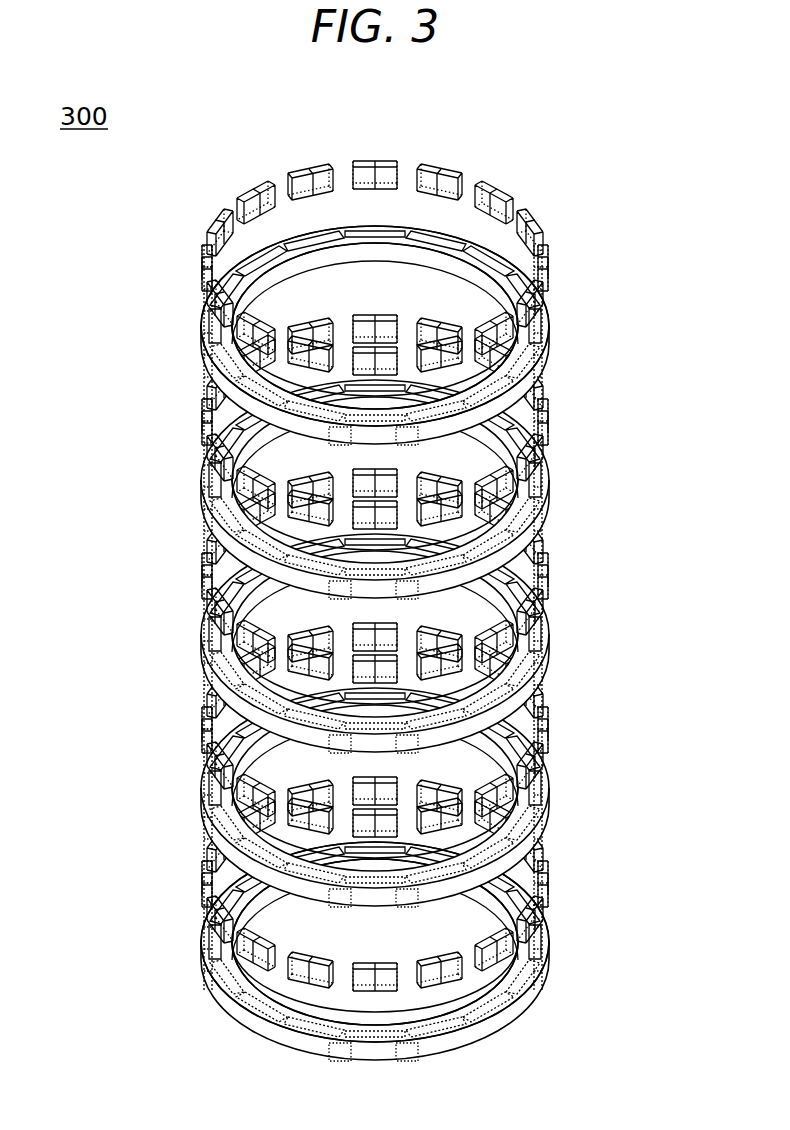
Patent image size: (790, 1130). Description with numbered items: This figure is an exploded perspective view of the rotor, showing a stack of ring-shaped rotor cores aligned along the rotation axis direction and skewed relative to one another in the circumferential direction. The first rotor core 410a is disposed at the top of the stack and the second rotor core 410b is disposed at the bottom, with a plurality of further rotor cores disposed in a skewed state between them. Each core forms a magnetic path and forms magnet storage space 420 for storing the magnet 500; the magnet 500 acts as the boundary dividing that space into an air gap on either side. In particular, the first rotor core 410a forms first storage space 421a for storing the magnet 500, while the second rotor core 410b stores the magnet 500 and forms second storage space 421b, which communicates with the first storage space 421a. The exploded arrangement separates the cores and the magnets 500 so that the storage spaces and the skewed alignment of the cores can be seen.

The magnet 500 is at (442, 611).
The first rotor core 410a is at (538, 363).
The second rotor core 410b is at (520, 1015).
The magnet storage space 420 is at (523, 510).
The first storage space 421a is at (532, 396).
The second storage space 421b is at (542, 965).